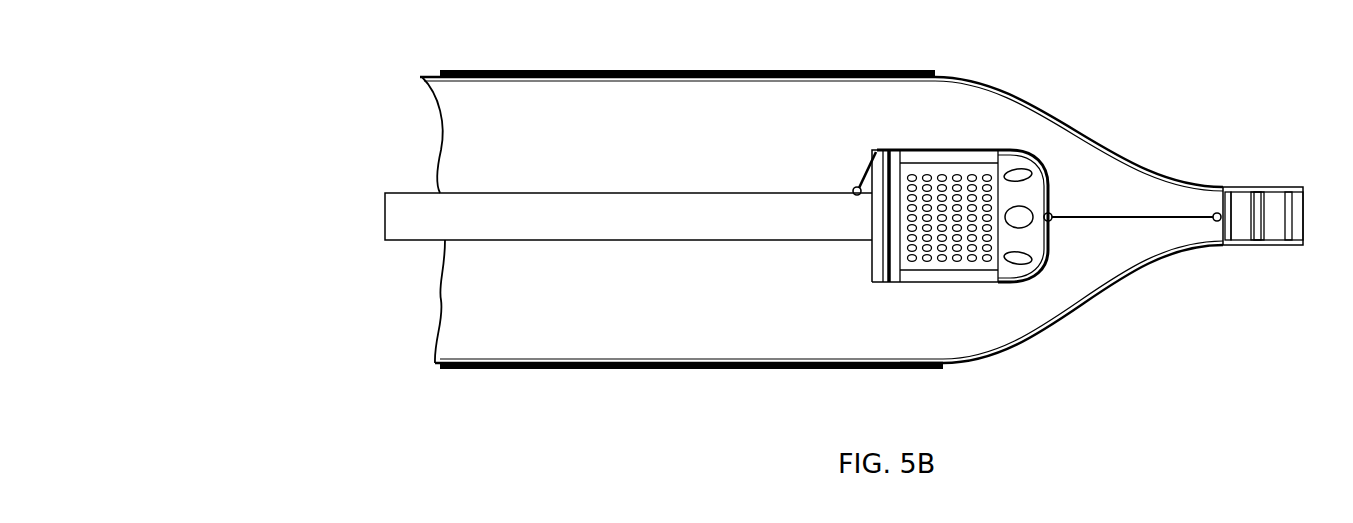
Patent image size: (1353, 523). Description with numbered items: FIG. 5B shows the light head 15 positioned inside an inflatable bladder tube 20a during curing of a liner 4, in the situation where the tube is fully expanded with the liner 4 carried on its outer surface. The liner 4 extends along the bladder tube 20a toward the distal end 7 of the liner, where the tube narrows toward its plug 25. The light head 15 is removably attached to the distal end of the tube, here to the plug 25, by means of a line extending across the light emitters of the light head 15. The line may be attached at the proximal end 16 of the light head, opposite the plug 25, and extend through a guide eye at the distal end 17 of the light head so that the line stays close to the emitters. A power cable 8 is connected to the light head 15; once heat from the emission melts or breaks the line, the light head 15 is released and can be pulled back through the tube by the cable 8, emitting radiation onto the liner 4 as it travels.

The liner 4 is at (488, 368).
The (power) cable 8 is at (571, 241).
The proximal end of light head 16 is at (870, 258).
The light head 15 is at (980, 284).
The distal end of light head 17 is at (1044, 251).
The distal end of liner 7 is at (945, 365).
The bladder tube 20a is at (1127, 285).
The plug 25 is at (1304, 216).